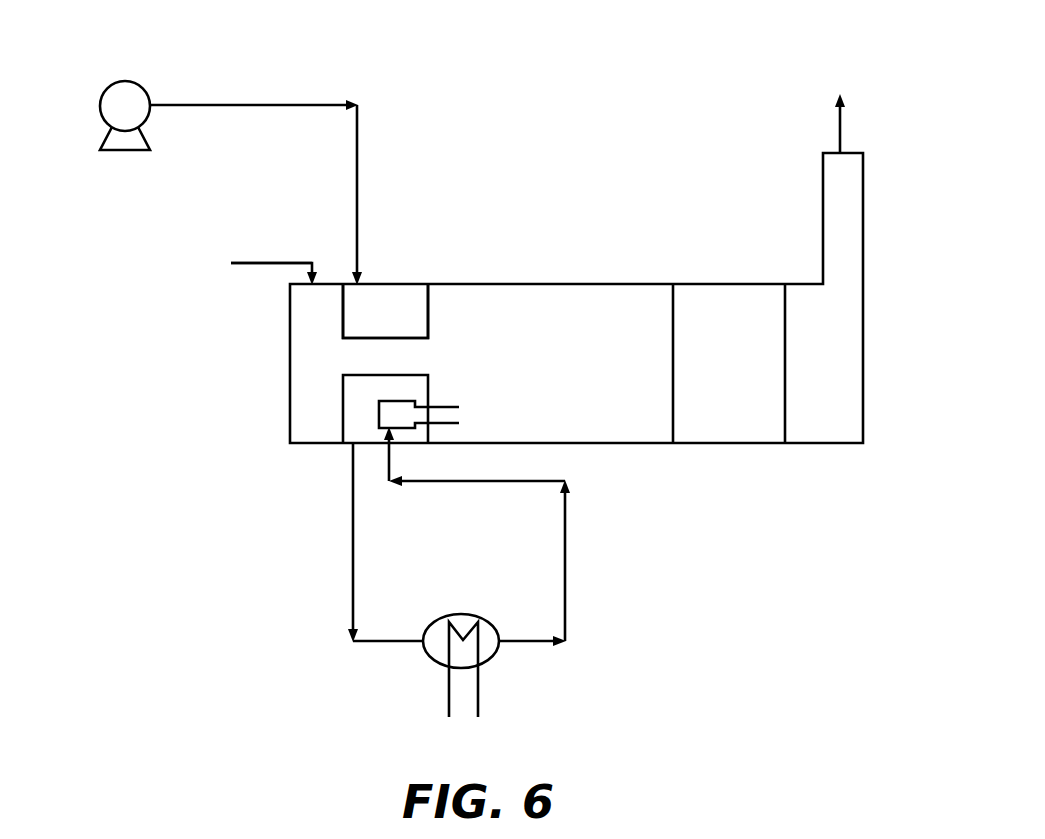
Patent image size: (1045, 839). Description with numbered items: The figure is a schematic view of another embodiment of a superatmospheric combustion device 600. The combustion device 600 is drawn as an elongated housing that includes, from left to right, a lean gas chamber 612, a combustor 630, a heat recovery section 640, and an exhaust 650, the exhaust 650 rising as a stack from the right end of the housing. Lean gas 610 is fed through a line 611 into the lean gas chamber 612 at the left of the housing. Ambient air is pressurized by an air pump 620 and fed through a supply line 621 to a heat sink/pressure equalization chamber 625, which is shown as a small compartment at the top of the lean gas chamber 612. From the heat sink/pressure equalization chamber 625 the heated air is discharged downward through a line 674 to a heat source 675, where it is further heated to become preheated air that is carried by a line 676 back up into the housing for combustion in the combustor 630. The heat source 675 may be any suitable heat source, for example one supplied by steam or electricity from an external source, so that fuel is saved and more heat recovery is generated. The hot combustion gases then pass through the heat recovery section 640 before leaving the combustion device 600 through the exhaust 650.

The combustion device 600 is at (453, 276).
The lean gas 610 is at (226, 297).
The line 611 is at (255, 263).
The lean gas chamber 612 is at (304, 322).
The air pump 620 is at (99, 100).
The supply line 621 is at (195, 105).
The heat sink/pressure equalization chamber 625 is at (380, 305).
The combustor 630 is at (580, 376).
The heat recovery section 640 is at (708, 372).
The exhaust 650 is at (840, 99).
The line 674 is at (353, 515).
The heat source 675 is at (428, 657).
The line 676 is at (565, 570).